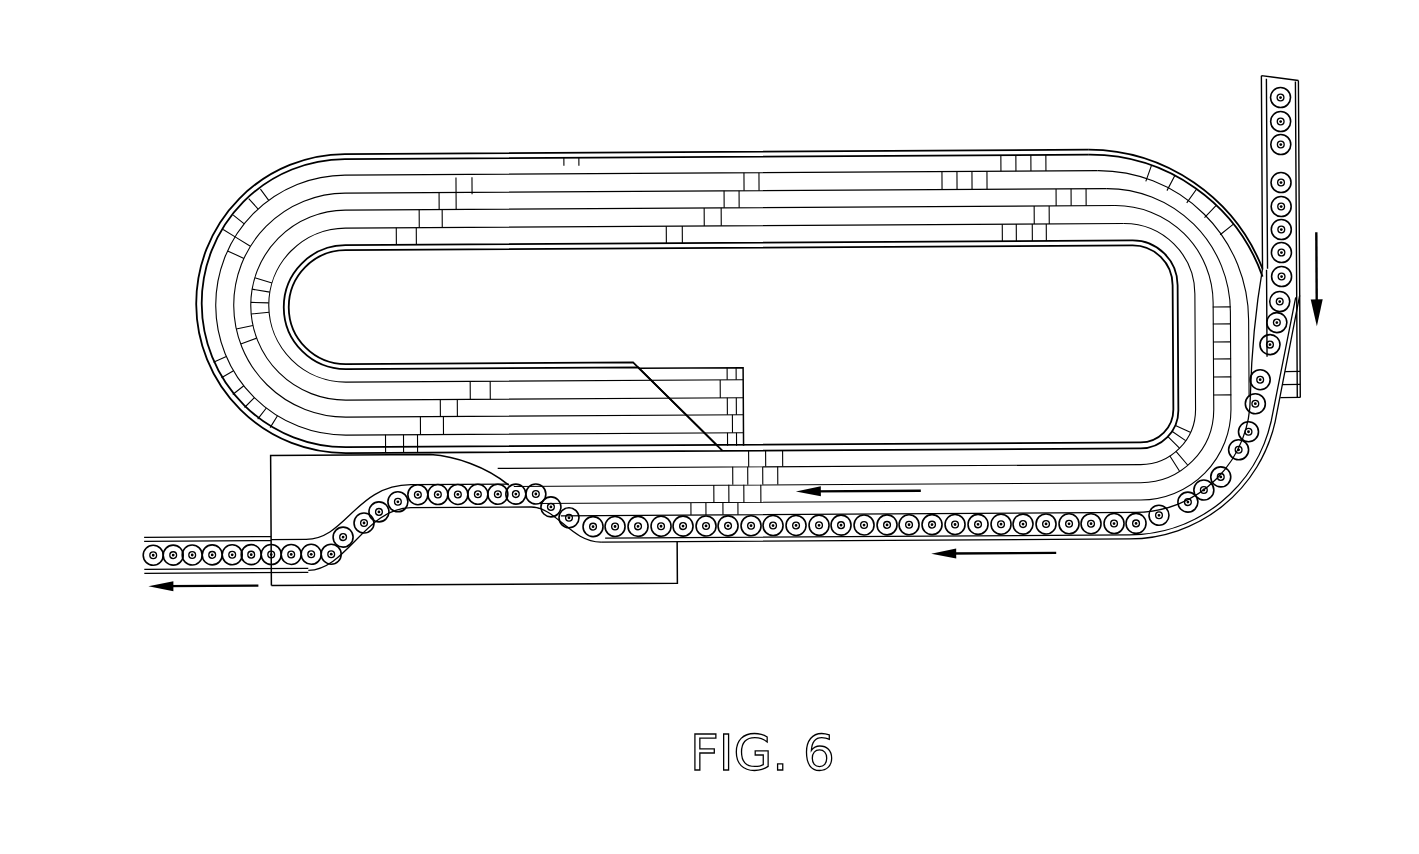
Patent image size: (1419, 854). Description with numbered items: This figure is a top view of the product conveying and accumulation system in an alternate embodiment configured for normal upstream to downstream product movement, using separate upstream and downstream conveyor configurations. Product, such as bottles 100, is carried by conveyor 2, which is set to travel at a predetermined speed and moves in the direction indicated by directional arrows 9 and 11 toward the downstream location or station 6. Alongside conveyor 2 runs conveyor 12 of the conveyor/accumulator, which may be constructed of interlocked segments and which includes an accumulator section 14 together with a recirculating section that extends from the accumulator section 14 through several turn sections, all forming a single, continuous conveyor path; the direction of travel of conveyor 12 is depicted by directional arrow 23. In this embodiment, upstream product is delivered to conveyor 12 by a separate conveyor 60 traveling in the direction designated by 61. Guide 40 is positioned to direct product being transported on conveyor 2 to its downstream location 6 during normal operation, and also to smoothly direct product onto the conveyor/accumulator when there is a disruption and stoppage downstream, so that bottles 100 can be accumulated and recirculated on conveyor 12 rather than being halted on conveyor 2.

The conveyor 2 is at (907, 540).
The downstream location 6 is at (229, 554).
The directional arrow 9 is at (993, 571).
The directional arrow 11 is at (203, 605).
The conveyor 12 is at (1207, 325).
The accumulator section 14 is at (638, 408).
The directional arrow 23 is at (843, 488).
The guide 40 is at (468, 555).
The conveyor 60 is at (1301, 189).
The direction of travel 61 is at (1332, 279).
The bottles 100 is at (704, 534).